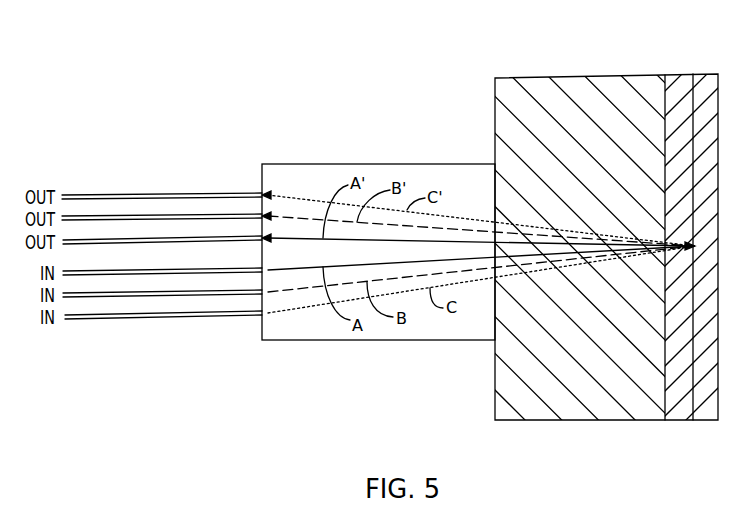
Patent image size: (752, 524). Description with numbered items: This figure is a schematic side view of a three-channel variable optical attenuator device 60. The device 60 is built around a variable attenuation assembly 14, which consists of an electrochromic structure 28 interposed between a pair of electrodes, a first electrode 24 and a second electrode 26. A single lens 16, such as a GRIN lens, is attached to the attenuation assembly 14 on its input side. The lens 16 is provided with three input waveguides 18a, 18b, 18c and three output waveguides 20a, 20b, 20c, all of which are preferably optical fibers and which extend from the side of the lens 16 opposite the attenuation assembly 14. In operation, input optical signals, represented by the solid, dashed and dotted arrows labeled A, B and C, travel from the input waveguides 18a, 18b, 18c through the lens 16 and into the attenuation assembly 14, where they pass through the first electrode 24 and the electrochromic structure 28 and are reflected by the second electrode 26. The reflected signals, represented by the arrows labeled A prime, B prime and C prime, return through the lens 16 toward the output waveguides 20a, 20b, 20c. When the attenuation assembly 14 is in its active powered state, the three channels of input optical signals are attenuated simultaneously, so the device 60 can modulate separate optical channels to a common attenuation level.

The three-channel VOA device 60 is at (370, 78).
The lens 16 is at (313, 171).
The output waveguide 20a is at (163, 238).
The output waveguide 20b is at (138, 218).
The output waveguide 20c is at (117, 196).
The input waveguide 18a is at (122, 275).
The input waveguide 18b is at (138, 297).
The input waveguide 18c is at (163, 318).
The variable attenuation assembly 14 is at (458, 255).
The first electrode 24 is at (560, 90).
The electrochromic structure 28 is at (677, 82).
The second electrode 26 is at (697, 82).